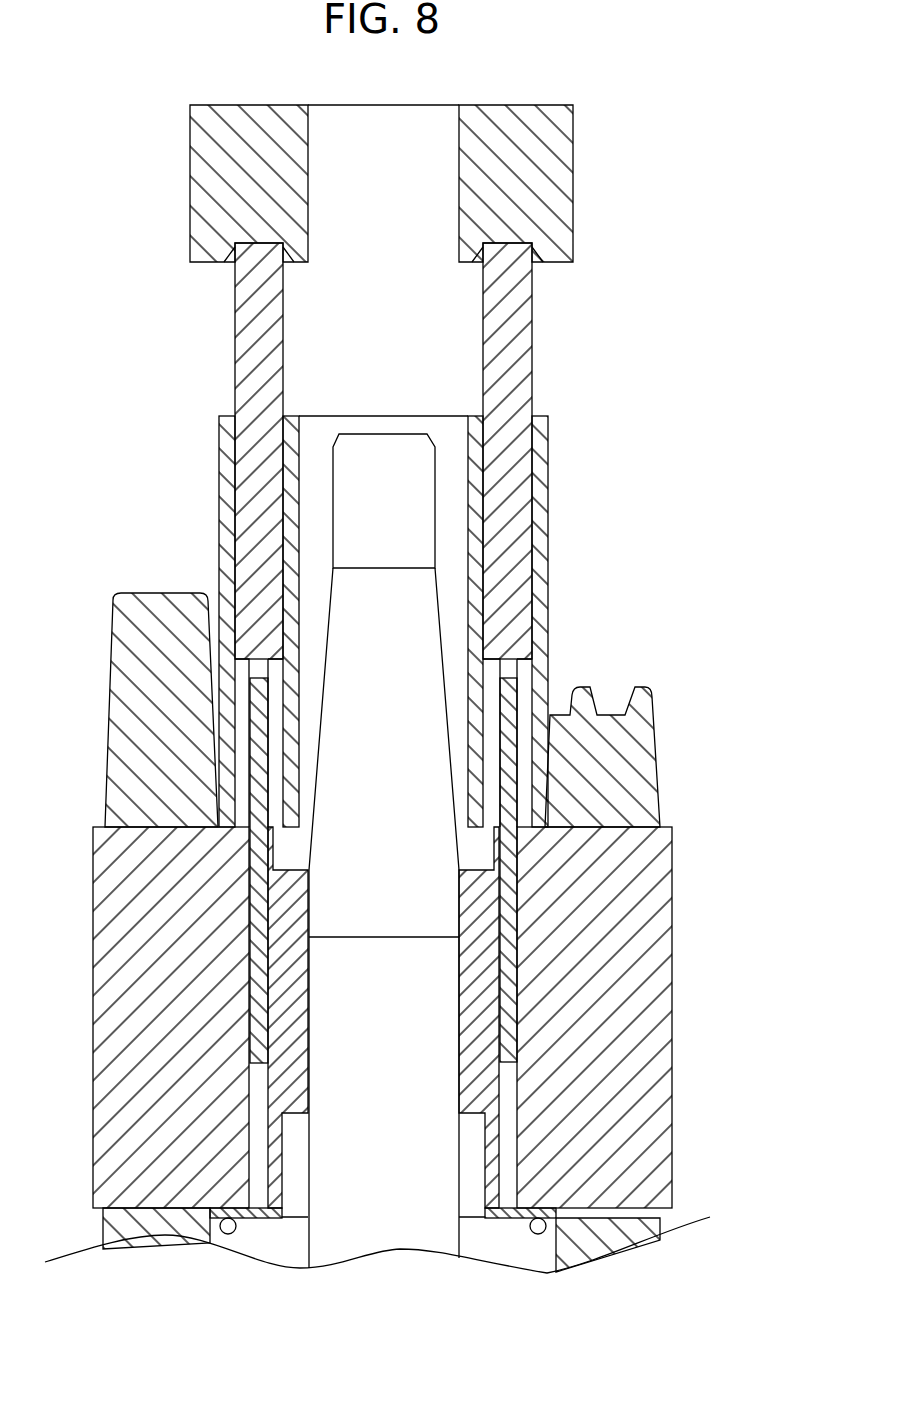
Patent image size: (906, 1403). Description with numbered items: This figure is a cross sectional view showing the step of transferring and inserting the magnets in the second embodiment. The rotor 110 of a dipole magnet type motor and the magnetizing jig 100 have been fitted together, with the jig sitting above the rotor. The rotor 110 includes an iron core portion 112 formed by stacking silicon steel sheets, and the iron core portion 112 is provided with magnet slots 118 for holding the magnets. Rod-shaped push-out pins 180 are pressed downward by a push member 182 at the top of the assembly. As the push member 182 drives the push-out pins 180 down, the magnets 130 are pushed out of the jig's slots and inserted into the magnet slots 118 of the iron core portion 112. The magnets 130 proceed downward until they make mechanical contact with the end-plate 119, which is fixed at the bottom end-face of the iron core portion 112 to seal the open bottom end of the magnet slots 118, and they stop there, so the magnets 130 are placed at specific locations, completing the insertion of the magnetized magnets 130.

The push member 182 is at (545, 216).
The push-out pins 180 is at (513, 327).
The magnetizing jig 100 is at (540, 458).
The rotor 110 is at (638, 744).
The iron core portion 112 is at (649, 882).
The magnets 130 is at (510, 975).
The magnet slots 118 is at (507, 1125).
The end-plate 119 is at (500, 1213).